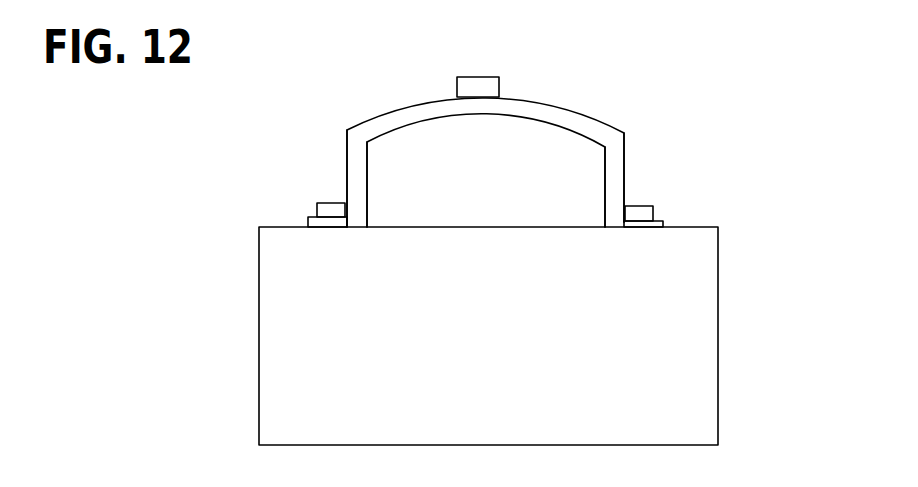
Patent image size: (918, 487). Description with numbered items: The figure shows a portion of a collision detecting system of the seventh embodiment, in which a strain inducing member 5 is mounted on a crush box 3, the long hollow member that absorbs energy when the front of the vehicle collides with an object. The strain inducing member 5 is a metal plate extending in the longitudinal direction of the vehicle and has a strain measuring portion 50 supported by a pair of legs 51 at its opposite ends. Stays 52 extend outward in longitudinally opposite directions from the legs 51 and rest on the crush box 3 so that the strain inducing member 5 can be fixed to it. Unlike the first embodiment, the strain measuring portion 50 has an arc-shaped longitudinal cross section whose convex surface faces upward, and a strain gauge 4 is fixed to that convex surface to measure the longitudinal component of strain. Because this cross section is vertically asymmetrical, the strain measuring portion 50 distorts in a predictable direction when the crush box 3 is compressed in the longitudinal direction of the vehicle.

The crush box 3 is at (703, 318).
The strain gauge 4 is at (480, 85).
The strain inducing member 5 is at (650, 118).
The strain measuring portion 50 is at (543, 113).
The legs 51 is at (355, 174).
The stays 52 is at (317, 230).